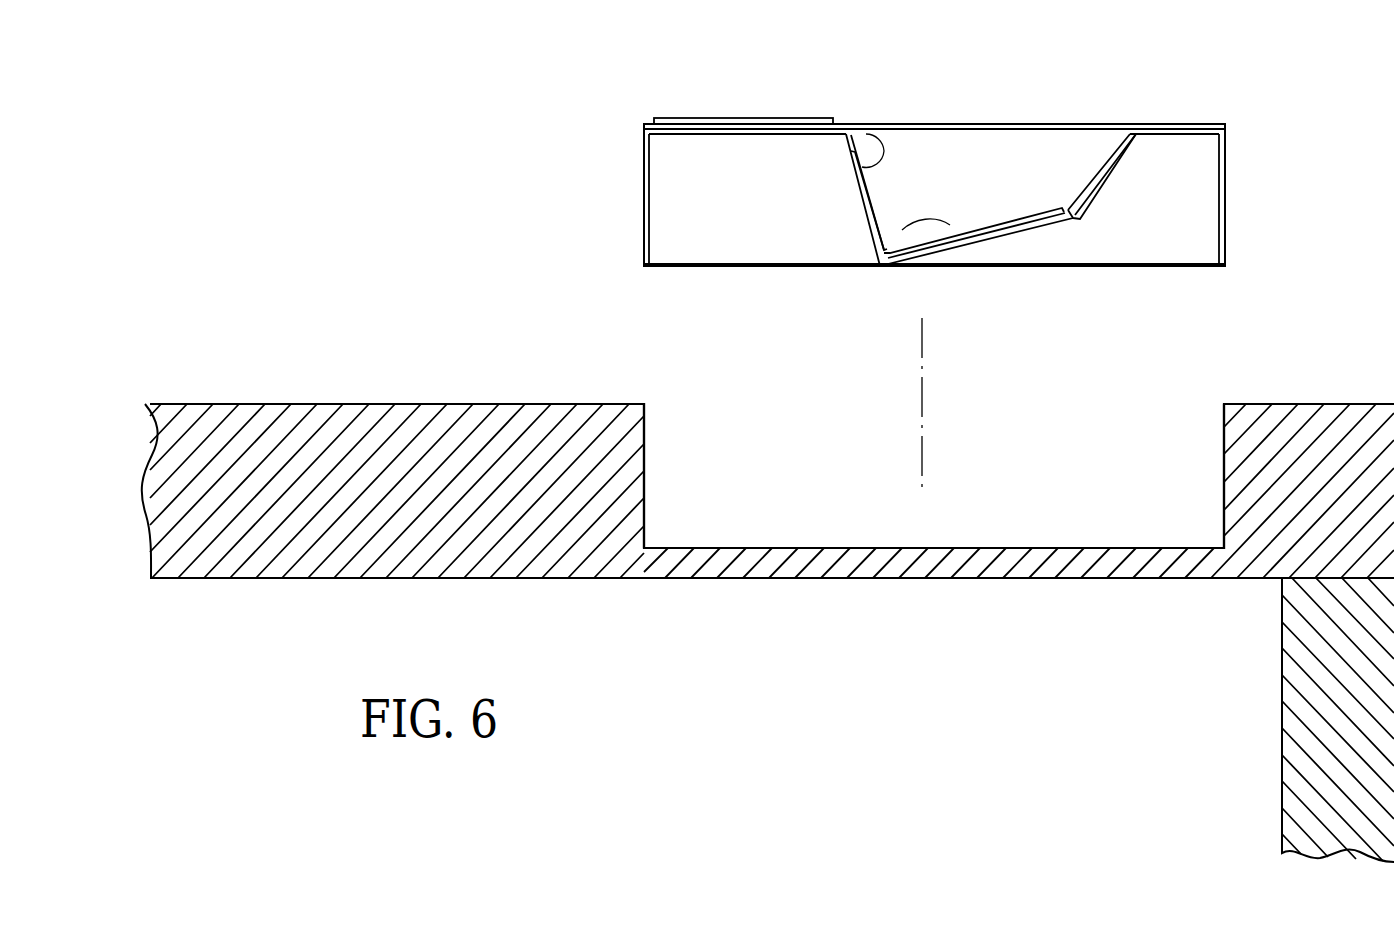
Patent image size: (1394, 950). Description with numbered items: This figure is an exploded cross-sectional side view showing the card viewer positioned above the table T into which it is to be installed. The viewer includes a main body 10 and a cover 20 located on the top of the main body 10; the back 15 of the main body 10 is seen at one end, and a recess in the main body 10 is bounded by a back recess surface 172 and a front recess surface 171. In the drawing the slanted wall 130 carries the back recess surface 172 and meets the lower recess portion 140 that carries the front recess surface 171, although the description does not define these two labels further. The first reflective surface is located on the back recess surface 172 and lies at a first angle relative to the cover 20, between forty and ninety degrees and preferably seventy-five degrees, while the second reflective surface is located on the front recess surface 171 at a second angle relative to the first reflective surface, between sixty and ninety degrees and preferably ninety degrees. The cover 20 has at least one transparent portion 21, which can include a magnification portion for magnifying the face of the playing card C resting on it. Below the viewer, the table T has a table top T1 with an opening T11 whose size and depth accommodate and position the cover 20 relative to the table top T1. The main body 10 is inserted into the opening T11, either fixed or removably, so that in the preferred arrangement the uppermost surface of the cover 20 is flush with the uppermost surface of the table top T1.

The main body 10 is at (690, 108).
The playing card C is at (748, 118).
The transparent portion 21 is at (983, 123).
The cover 20 is at (1177, 118).
The back 15 is at (644, 208).
The back recess surface 172 is at (862, 208).
The elastic bent portion 130 is at (910, 245).
The front recess surface 171 is at (1016, 240).
The supporting portion 140 is at (1068, 222).
The table top T1 is at (339, 400).
The opening T11 is at (1137, 440).
The table T is at (1345, 402).